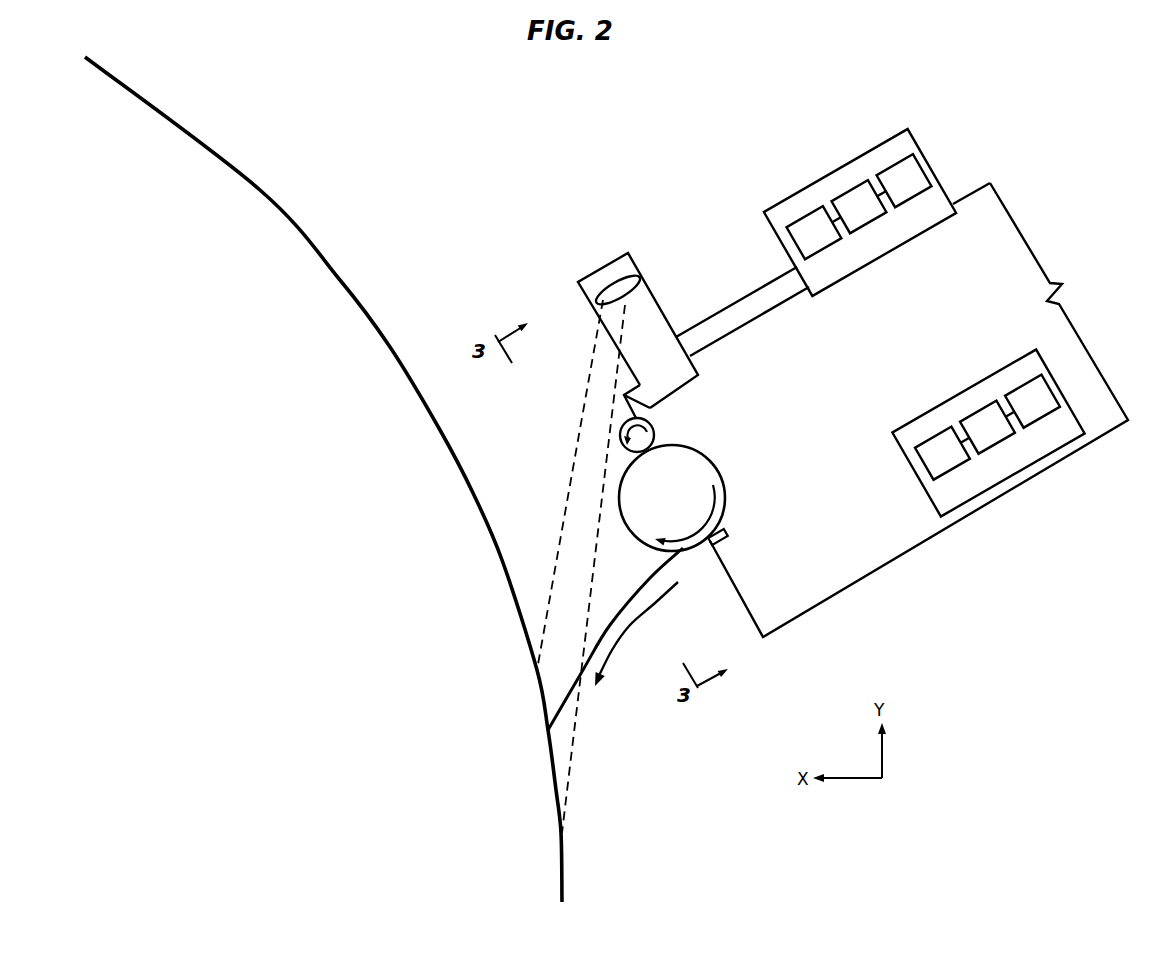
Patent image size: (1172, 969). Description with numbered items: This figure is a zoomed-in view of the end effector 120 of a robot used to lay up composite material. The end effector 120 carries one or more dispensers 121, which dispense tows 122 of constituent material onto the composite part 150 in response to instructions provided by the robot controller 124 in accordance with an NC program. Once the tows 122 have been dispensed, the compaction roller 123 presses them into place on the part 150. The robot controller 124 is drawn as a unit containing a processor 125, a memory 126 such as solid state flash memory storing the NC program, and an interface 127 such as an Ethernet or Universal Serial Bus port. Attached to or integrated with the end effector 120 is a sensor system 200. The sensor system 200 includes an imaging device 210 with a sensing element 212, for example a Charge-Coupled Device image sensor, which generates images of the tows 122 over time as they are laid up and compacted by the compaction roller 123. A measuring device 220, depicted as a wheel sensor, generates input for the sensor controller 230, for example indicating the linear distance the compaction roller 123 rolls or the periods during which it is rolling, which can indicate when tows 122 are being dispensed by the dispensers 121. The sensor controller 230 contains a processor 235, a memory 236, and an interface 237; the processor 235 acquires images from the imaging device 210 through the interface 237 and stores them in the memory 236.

The end effector 120 is at (1084, 262).
The dispenser 121 is at (728, 533).
The tow 122 is at (625, 606).
The compaction roller 123 is at (725, 487).
The robot controller 124 is at (1000, 370).
The processor 125 is at (1045, 397).
The memory 126 is at (978, 412).
The interface 127 is at (935, 465).
The composite part 150 is at (262, 190).
The sensor system 200 is at (730, 135).
The imaging device 210 is at (668, 318).
The sensing element 212 is at (617, 285).
The measuring device 220 is at (655, 423).
The sensor controller 230 is at (860, 150).
The processor 235 is at (932, 172).
The memory 236 is at (868, 213).
The interface 237 is at (805, 240).